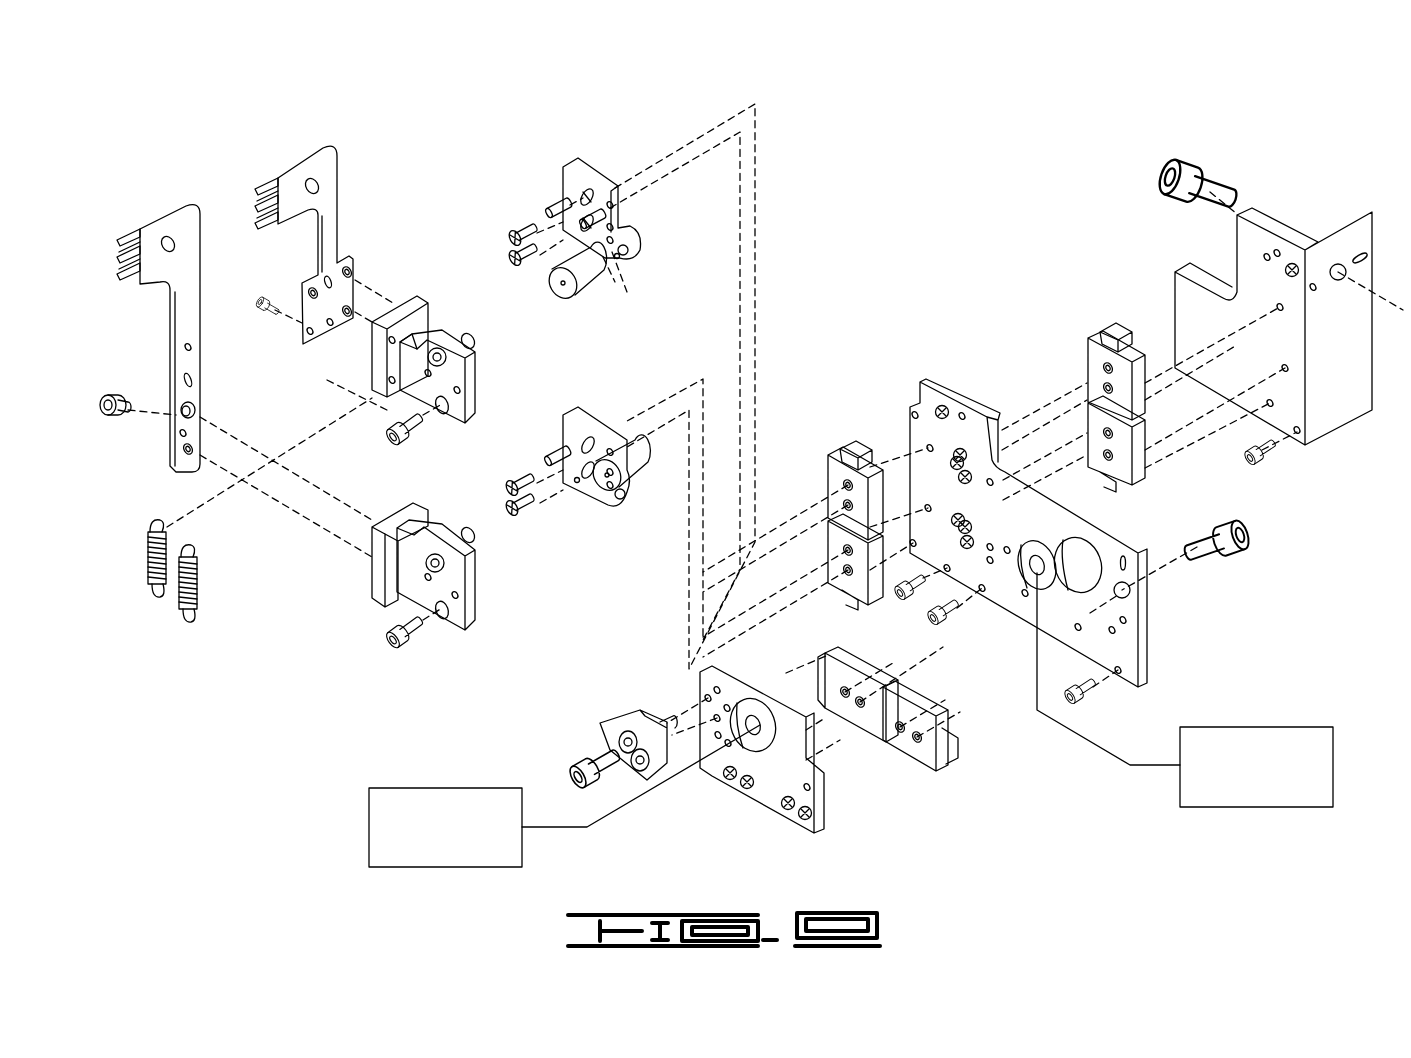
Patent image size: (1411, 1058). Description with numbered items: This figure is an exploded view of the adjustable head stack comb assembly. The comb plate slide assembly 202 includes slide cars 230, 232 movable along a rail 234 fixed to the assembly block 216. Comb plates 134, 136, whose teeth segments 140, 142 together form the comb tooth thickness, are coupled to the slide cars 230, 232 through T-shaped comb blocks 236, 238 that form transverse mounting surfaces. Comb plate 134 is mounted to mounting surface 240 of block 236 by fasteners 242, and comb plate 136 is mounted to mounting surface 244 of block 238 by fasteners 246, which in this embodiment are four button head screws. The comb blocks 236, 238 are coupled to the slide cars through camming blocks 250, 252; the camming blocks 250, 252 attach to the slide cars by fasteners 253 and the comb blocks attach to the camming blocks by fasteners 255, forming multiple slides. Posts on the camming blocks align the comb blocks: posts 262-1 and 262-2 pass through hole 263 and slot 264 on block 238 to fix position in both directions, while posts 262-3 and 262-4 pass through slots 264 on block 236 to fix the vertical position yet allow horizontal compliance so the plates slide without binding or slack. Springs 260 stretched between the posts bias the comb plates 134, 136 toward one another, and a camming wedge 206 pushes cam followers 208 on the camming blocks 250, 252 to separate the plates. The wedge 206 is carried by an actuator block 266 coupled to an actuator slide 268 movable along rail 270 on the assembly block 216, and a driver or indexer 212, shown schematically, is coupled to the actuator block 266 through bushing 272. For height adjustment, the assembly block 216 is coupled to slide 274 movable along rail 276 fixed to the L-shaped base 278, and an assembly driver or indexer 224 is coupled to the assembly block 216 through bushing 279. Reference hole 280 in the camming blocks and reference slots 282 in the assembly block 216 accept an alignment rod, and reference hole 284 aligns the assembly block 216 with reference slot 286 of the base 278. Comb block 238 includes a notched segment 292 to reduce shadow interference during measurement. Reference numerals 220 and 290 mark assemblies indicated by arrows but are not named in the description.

The comb plate 134 is at (180, 333).
The comb plate 136 is at (333, 200).
The teeth segments 140 is at (118, 240).
The teeth segments 142 is at (262, 180).
The comb plate slide assembly 202 is at (543, 150).
The camming wedge 206 is at (600, 728).
The cam followers 208 is at (642, 243).
The indexer or driver 212 is at (369, 822).
The assembly block 216 is at (930, 382).
The clamp assembly 220 is at (1118, 290).
The assembly driver or indexer 224 is at (1288, 727).
The slide car 230 is at (857, 587).
The slide car 232 is at (828, 457).
The rail 234 is at (848, 443).
The comb block 236 is at (495, 603).
The comb block 238 is at (492, 336).
The mounting surface 240 is at (372, 580).
The fasteners 242 is at (110, 393).
The mounting surface 244 is at (372, 377).
The fasteners 246 is at (260, 297).
The camming block 250 is at (608, 395).
The camming block 252 is at (597, 170).
The fasteners 253 is at (508, 237).
The fasteners 255 is at (388, 442).
The springs 260 is at (150, 560).
The post 262-1 is at (558, 202).
The post 262-2 is at (610, 253).
The post 262-3 is at (547, 452).
The post 262-4 is at (580, 482).
The hole 263 is at (473, 375).
The slot 264 is at (467, 408).
The actuator block 266 is at (700, 690).
The actuator slide 268 is at (917, 757).
The rail 270 is at (958, 750).
The bushing 272 is at (765, 748).
The slide 274 is at (1090, 372).
The rail 276 is at (1103, 330).
The base 278 is at (1258, 218).
The bushing 279 is at (1058, 528).
The reference hole 280 is at (630, 213).
The reference slots 282 is at (955, 515).
The reference hole 284 is at (963, 414).
The reference slot 286 is at (1277, 253).
The screw assembly 290 is at (1238, 152).
The notched segment 292 is at (418, 342).